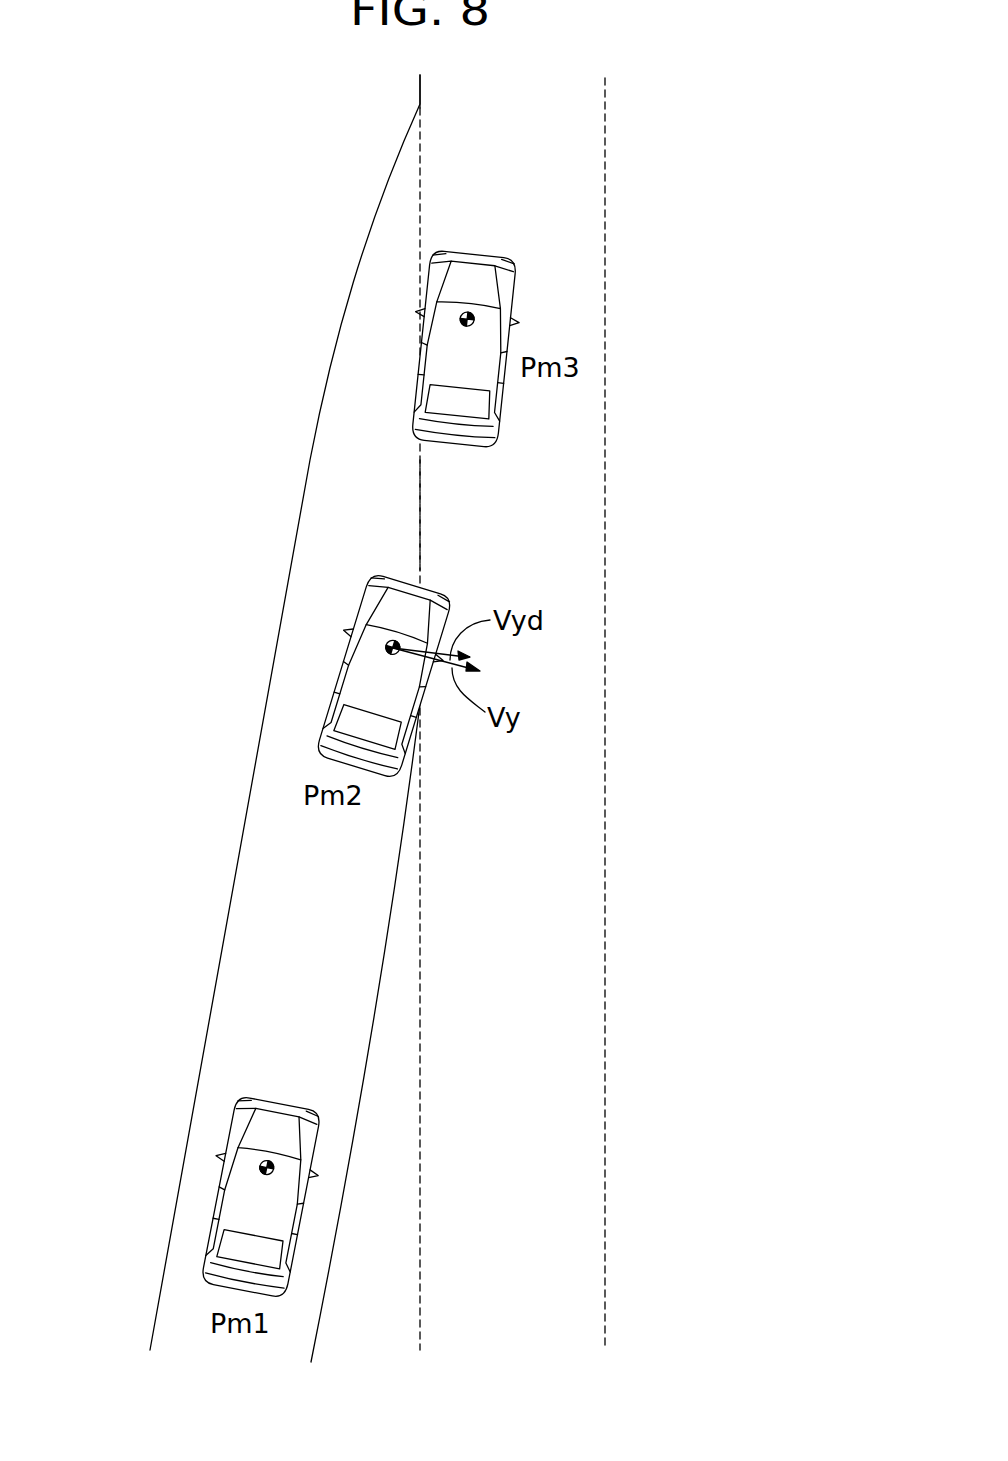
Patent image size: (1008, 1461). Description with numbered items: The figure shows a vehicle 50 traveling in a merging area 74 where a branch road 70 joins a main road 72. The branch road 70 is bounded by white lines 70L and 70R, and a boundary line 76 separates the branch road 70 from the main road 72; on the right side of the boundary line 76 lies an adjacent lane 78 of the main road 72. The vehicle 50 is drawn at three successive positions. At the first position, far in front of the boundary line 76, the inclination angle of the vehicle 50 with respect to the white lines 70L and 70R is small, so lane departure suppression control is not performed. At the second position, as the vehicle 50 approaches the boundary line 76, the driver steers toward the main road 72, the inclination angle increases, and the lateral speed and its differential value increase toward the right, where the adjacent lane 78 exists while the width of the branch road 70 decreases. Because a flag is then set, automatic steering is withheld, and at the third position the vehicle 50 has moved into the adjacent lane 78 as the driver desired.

The vehicle 50 is at (218, 1178).
The branch road 70 is at (305, 718).
The white line 70L is at (213, 990).
The white line 70R is at (372, 1013).
The main road 72 is at (672, 208).
The merging area 74 is at (322, 248).
The boundary line 76 is at (421, 512).
The adjacent lane 78 is at (515, 113).